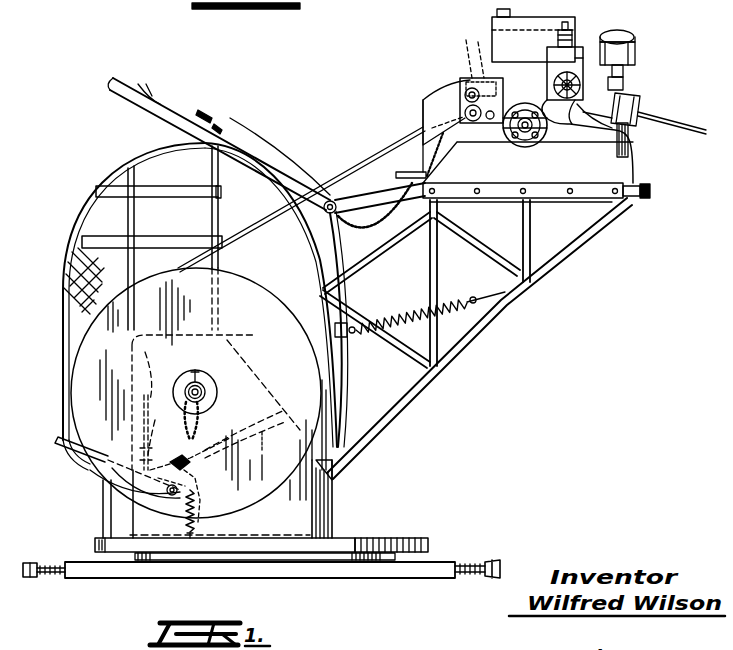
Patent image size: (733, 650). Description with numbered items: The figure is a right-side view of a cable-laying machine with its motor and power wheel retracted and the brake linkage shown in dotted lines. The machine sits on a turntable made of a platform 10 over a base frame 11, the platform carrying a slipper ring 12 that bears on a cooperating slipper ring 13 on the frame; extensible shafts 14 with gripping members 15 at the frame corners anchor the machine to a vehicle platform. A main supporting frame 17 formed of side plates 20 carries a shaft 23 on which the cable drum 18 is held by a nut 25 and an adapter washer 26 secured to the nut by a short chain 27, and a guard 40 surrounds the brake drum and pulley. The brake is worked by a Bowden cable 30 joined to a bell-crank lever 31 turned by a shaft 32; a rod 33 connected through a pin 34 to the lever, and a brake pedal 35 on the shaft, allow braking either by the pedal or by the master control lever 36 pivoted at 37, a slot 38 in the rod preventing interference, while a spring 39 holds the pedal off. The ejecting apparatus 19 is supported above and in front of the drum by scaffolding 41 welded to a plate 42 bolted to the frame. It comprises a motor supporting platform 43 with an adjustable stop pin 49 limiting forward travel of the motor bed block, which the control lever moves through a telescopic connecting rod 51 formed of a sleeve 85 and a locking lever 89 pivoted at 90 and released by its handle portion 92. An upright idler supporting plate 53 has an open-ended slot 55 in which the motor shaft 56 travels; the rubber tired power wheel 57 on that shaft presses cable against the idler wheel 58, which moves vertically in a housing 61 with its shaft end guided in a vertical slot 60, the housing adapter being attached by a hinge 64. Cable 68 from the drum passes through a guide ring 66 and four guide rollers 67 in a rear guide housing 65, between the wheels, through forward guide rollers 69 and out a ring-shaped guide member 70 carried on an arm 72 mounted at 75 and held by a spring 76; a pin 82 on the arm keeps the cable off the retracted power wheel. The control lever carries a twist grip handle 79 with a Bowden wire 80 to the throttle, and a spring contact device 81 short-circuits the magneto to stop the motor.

The platform 10 is at (376, 538).
The base frame 11 is at (322, 565).
The slipper ring 12 is at (178, 557).
The slipper ring 13 is at (233, 555).
The extensible shaft 14 is at (50, 566).
The gripping member 15 is at (30, 578).
The main supporting frame 17 is at (340, 484).
The cable drum 18 is at (262, 496).
The ejecting apparatus 19 is at (513, 199).
The side plate 20 is at (333, 506).
The shaft 23 is at (206, 392).
The nut 25 is at (195, 370).
The adapter washer 26 is at (210, 384).
The short chain 27 is at (200, 426).
The Bowden cable 30 is at (150, 400).
The bell-crank lever 31 is at (163, 432).
The shaft 32 is at (178, 496).
The rod 33 is at (245, 434).
The pin 34 is at (190, 446).
The brake pedal 35 is at (108, 488).
The master control lever 36 is at (178, 120).
The pivot 37 is at (335, 432).
The slot 38 is at (180, 480).
The spring 39 is at (200, 508).
The guard 40 is at (70, 278).
The scaffolding 41 is at (496, 325).
The plate 42 is at (300, 458).
The motor supporting platform 43 is at (560, 199).
The adjustable stop pin 49 is at (652, 191).
The telescopic connecting rod 51 is at (421, 184).
The idler supporting plate 53 is at (612, 160).
The open-ended slot 55 is at (528, 162).
The motor shaft 56 is at (553, 135).
The power wheel 57 is at (520, 140).
The idler wheel 58 is at (600, 48).
The vertical slot 60 is at (590, 118).
The housing 61 is at (573, 52).
The hinge 64 is at (545, 80).
The rear guide housing 65 is at (437, 100).
The guide ring 66 is at (425, 100).
The guide roller 67 is at (464, 53).
The cable 68 is at (332, 198).
The forward guide roller 69 is at (633, 142).
The guide member 70 is at (655, 118).
The arm 72 is at (625, 100).
The mounting 75 is at (566, 55).
The spring 76 is at (533, 68).
The twist grip handle 79 is at (142, 96).
The Bowden wire 80 is at (396, 236).
The spring contact device 81 is at (210, 114).
The pin 82 is at (576, 126).
The sleeve 85 is at (398, 222).
The lever 89 is at (405, 170).
The pivot 90 is at (410, 171).
The handle portion 92 is at (424, 176).